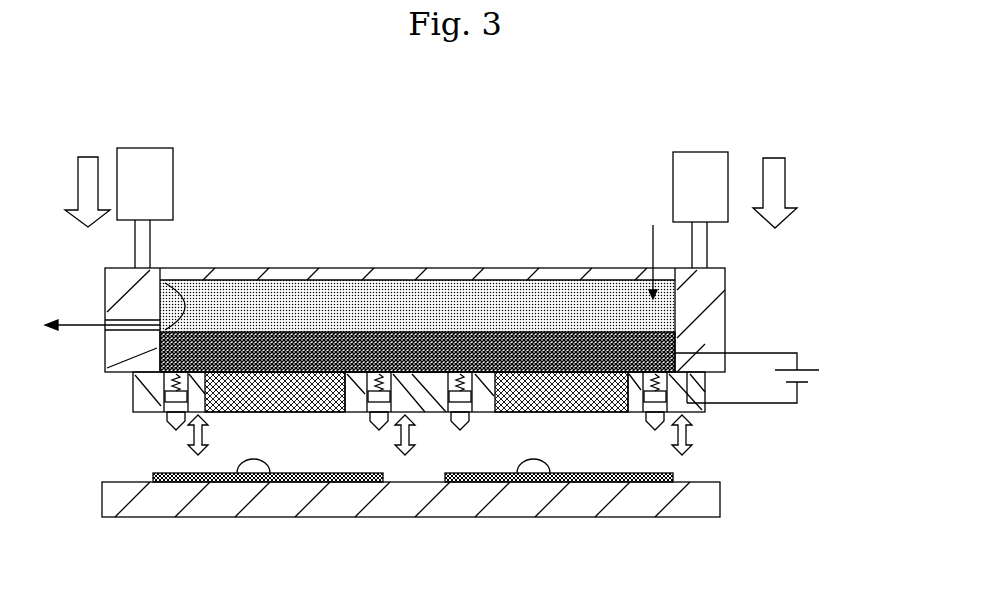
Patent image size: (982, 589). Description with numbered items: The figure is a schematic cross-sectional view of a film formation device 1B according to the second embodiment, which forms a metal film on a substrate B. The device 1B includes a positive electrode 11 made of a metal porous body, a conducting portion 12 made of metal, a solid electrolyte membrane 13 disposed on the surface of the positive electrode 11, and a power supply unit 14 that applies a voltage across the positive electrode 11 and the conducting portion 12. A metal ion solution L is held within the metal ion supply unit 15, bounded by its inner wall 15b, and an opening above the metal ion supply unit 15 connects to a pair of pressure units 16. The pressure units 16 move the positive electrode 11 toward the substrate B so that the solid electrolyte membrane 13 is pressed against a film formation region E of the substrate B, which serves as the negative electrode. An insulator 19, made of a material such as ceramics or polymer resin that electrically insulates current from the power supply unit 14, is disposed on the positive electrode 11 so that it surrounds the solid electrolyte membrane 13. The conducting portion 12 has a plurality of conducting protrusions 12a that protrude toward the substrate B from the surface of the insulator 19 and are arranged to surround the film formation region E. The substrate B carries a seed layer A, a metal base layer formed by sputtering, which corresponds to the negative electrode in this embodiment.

The film formation device 1B is at (128, 92).
The pressure unit 16 is at (162, 188).
The inner wall 15b is at (178, 282).
The metal ion solution L is at (462, 280).
The metal ion supply unit 15 is at (702, 306).
The power supply unit 14 is at (807, 371).
The positive electrode 11 is at (150, 350).
The insulator 19 is at (143, 408).
The conducting protrusion 12a is at (177, 420).
The conducting portion 12 is at (460, 422).
The solid electrolyte membrane 13 is at (313, 405).
The seed layer A is at (207, 473).
The substrate B is at (702, 502).
The film formation region E is at (269, 472).